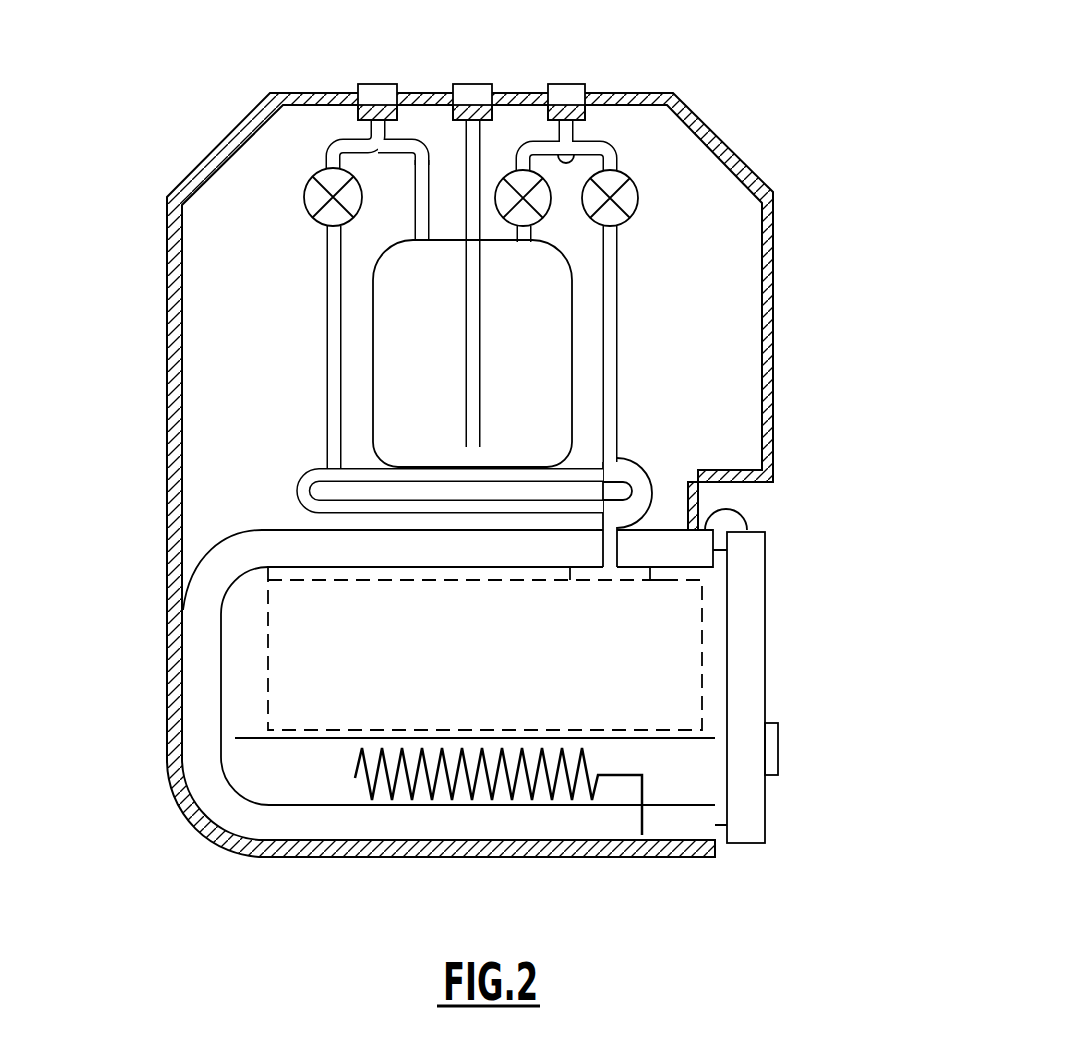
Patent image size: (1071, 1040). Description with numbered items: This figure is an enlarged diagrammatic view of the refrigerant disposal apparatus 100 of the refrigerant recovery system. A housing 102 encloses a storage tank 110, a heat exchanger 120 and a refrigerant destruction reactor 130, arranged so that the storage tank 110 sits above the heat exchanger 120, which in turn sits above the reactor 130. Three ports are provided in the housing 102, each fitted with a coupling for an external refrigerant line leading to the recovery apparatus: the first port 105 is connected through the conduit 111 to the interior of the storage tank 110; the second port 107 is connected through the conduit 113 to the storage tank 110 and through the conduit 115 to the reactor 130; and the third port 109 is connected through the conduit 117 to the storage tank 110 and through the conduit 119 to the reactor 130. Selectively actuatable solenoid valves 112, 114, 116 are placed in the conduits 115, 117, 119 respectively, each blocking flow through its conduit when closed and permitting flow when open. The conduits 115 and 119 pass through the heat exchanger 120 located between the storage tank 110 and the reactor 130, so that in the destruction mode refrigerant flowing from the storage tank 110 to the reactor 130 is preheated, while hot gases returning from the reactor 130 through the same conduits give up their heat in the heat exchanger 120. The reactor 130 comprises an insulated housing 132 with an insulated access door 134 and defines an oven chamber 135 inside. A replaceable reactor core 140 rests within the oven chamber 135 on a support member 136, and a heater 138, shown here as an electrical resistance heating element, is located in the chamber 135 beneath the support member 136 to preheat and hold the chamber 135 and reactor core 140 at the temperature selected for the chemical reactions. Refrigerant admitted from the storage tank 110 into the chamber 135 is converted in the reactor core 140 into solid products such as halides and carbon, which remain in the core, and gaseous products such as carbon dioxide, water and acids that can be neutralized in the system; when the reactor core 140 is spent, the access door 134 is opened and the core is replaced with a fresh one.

The refrigerant disposal apparatus 100 is at (477, 463).
The housing 102 is at (167, 265).
The first port 105 is at (475, 84).
The second port 107 is at (383, 84).
The third port 109 is at (565, 84).
The storage tank 110 is at (373, 372).
The conduit 111 is at (467, 382).
The solenoid valve 112 is at (304, 197).
The conduit 113 is at (413, 211).
The solenoid valve 114 is at (498, 217).
The conduit 115 is at (327, 300).
The solenoid valve 116 is at (622, 228).
The conduit 117 is at (590, 146).
The conduit 119 is at (618, 323).
The heat exchanger 120 is at (308, 470).
The refrigerant destruction reactor 130 is at (167, 658).
The insulated housing 132 is at (258, 823).
The insulated access door 134 is at (766, 572).
The oven chamber 135 is at (308, 791).
The support member 136 is at (703, 740).
The heater 138 is at (557, 770).
The replaceable reactor core 140 is at (680, 651).